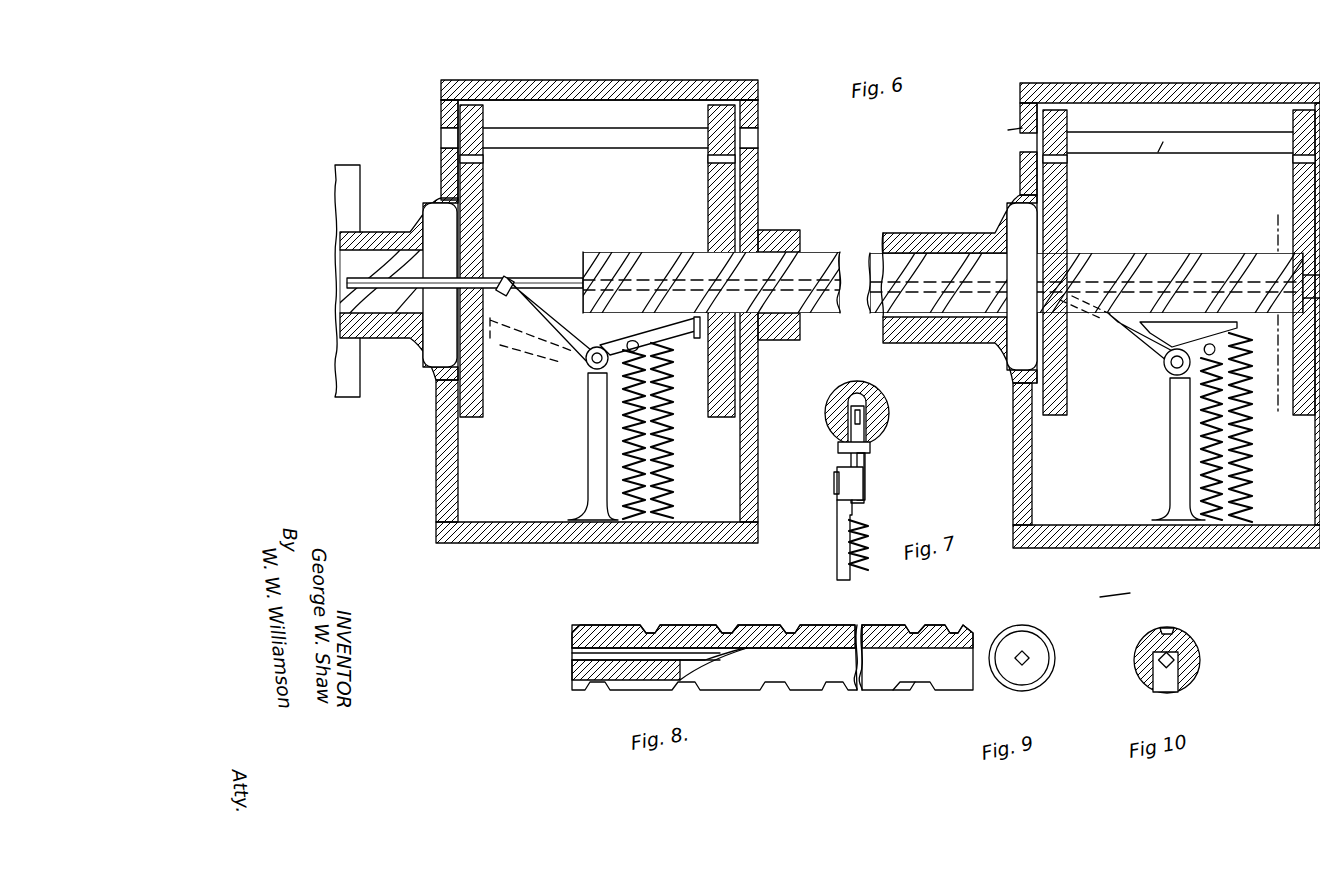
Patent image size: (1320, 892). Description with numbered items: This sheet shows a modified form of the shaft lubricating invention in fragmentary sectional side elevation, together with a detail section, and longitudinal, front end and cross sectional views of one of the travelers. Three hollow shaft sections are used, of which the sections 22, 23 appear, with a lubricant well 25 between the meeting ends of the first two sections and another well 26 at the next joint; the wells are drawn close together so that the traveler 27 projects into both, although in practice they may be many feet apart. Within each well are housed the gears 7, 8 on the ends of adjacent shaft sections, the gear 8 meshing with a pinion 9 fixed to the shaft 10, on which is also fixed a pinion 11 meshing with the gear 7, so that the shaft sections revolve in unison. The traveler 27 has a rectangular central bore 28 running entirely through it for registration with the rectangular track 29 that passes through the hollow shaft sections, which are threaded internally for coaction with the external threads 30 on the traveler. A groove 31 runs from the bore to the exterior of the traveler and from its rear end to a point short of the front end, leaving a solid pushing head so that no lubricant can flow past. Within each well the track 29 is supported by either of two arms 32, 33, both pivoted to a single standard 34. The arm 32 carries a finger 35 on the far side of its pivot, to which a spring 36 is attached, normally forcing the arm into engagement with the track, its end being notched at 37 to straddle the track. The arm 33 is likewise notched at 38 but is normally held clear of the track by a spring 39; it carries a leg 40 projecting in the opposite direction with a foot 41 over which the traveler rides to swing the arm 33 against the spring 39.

In FIG. 6, the gear 7 is at (483, 180).
In FIG. 6, the gear 8 is at (740, 190).
In FIG. 6, the pinion 9 is at (745, 116).
In FIG. 6, the shaft 10 is at (665, 142).
In FIG. 6, the pinion 11 is at (510, 100).
In FIG. 6, the hollow shaft section 22 is at (376, 236).
In FIG. 6, the hollow shaft section 23 is at (945, 236).
In FIG. 6, the lubricant well 25 is at (735, 480).
In FIG. 6, the lubricant well 26 is at (1045, 452).
In FIG. 6, the traveler 27 is at (822, 248).
In FIG. 8, the traveler 27 is at (825, 630).
In FIG. 9, the traveler 27 is at (1030, 632).
In FIG. 10, the traveler 27 is at (1140, 678).
In FIG. 8, the rectangular central bore 28 is at (608, 655).
In FIG. 9, the rectangular central bore 28 is at (1030, 655).
In FIG. 6, the rectangular track 29 is at (460, 278).
In FIG. 10, the rectangular track 29 is at (1185, 655).
In FIG. 6, the external threads 30 is at (938, 300).
In FIG. 8, the external threads 30 is at (722, 632).
In FIG. 9, the external threads 30 is at (997, 645).
In FIG. 10, the external threads 30 is at (1172, 630).
In FIG. 8, the groove 31 is at (893, 688).
In FIG. 10, the groove 31 is at (1185, 676).
In FIG. 6, the arm 32 is at (545, 340).
In FIG. 7, the arm 32 is at (865, 461).
In FIG. 6, the arm 33 is at (696, 338).
In FIG. 7, the arm 33 is at (838, 449).
In FIG. 6, the standard 34 is at (590, 428).
In FIG. 7, the standard 34 is at (836, 562).
In FIG. 6, the finger 35 is at (605, 367).
In FIG. 7, the finger 35 is at (866, 472).
In FIG. 6, the spring 36 is at (628, 440).
In FIG. 6, the notch 37 is at (512, 281).
In FIG. 7, the notch 38 is at (886, 440).
In FIG. 6, the spring 39 is at (672, 462).
In FIG. 7, the spring 39 is at (870, 565).
In FIG. 6, the leg 40 is at (590, 352).
In FIG. 6, the foot 41 is at (574, 266).
In FIG. 7, the foot 41 is at (838, 443).